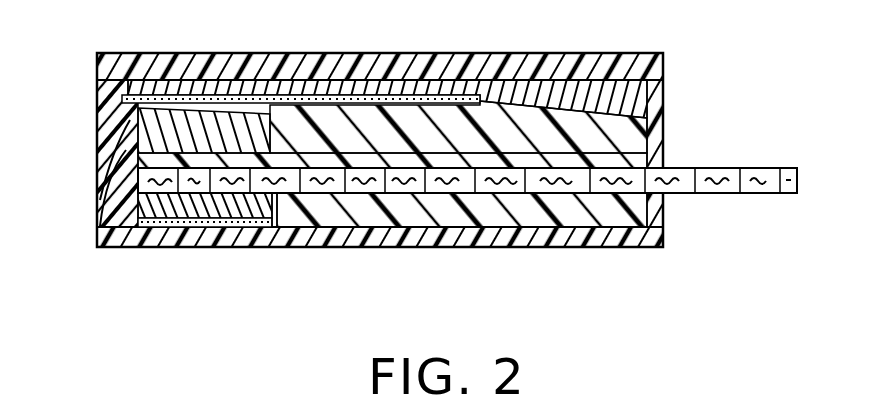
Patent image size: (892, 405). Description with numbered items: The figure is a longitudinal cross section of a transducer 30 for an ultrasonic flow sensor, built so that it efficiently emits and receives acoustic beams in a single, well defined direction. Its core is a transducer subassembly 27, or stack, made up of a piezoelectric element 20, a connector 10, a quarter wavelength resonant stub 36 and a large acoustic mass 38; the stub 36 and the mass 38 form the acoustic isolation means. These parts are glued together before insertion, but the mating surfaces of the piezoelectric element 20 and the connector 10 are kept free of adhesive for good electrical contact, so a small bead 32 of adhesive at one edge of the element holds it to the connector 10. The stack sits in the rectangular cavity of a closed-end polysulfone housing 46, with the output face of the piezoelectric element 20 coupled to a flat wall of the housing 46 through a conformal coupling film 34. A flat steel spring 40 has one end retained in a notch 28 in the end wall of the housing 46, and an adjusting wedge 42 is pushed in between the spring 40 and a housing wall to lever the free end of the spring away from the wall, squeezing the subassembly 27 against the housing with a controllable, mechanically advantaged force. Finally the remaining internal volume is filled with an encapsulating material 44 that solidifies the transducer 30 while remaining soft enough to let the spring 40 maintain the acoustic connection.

The connector 10 is at (706, 197).
The piezoelectric element 20 is at (97, 232).
The transducer subassembly 27 is at (280, 203).
The notch 28 is at (99, 115).
The transducer 30 is at (205, 312).
The bead of adhesive 32 is at (281, 201).
The conformal coupling film 34 is at (215, 220).
The quarter wavelength resonant stub 36 is at (96, 210).
The acoustic mass 38 is at (99, 150).
The spring 40 is at (306, 53).
The adjusting wedge 42 is at (655, 100).
The encapsulating material 44 is at (402, 215).
The housing 46 is at (520, 248).